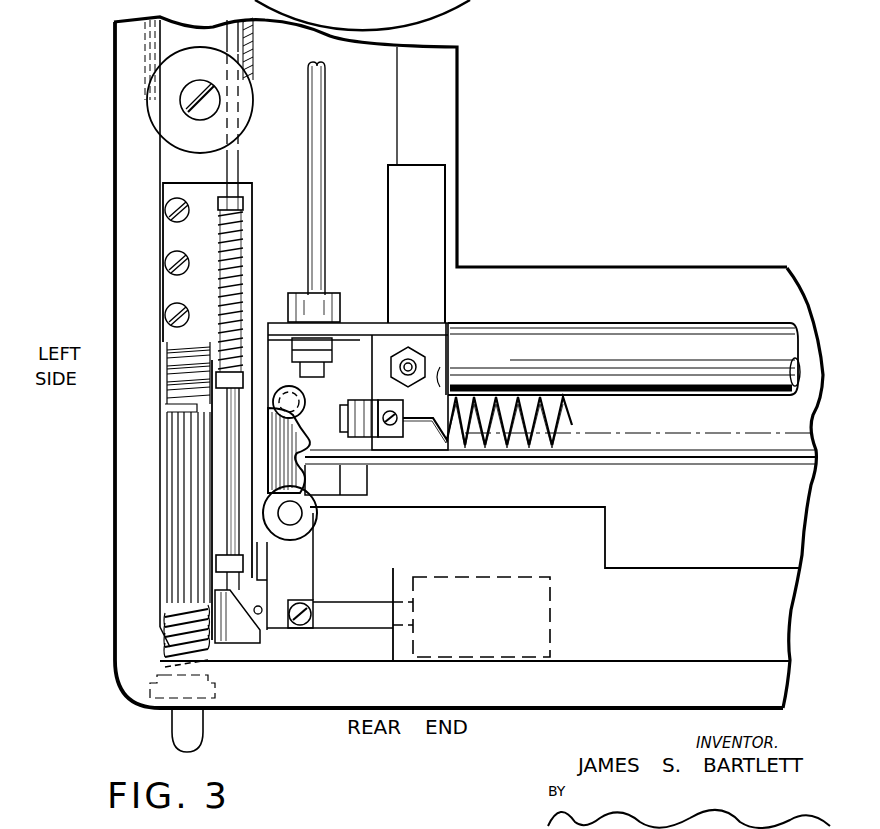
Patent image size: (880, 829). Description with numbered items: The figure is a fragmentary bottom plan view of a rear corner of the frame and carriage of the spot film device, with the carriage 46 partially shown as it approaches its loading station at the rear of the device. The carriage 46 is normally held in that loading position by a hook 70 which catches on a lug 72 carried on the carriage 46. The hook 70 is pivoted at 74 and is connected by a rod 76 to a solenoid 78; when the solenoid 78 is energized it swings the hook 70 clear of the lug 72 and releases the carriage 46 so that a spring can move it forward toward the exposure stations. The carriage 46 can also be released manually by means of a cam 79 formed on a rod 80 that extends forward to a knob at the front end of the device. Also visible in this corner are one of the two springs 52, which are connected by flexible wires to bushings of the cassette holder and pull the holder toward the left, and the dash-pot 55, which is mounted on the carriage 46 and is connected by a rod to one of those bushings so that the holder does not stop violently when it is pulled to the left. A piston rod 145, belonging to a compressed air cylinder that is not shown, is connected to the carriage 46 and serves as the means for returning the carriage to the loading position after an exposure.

The carriage 46 is at (514, 288).
The springs 52 is at (488, 437).
The dash-pot 55 is at (592, 340).
The hook 70 is at (277, 438).
The lug 72 is at (288, 385).
The pivot 74 is at (292, 516).
The rod 76 is at (334, 618).
The solenoid 78 is at (543, 630).
The cam 79 is at (243, 630).
The rod 80 is at (228, 540).
The piston rod 145 is at (317, 132).